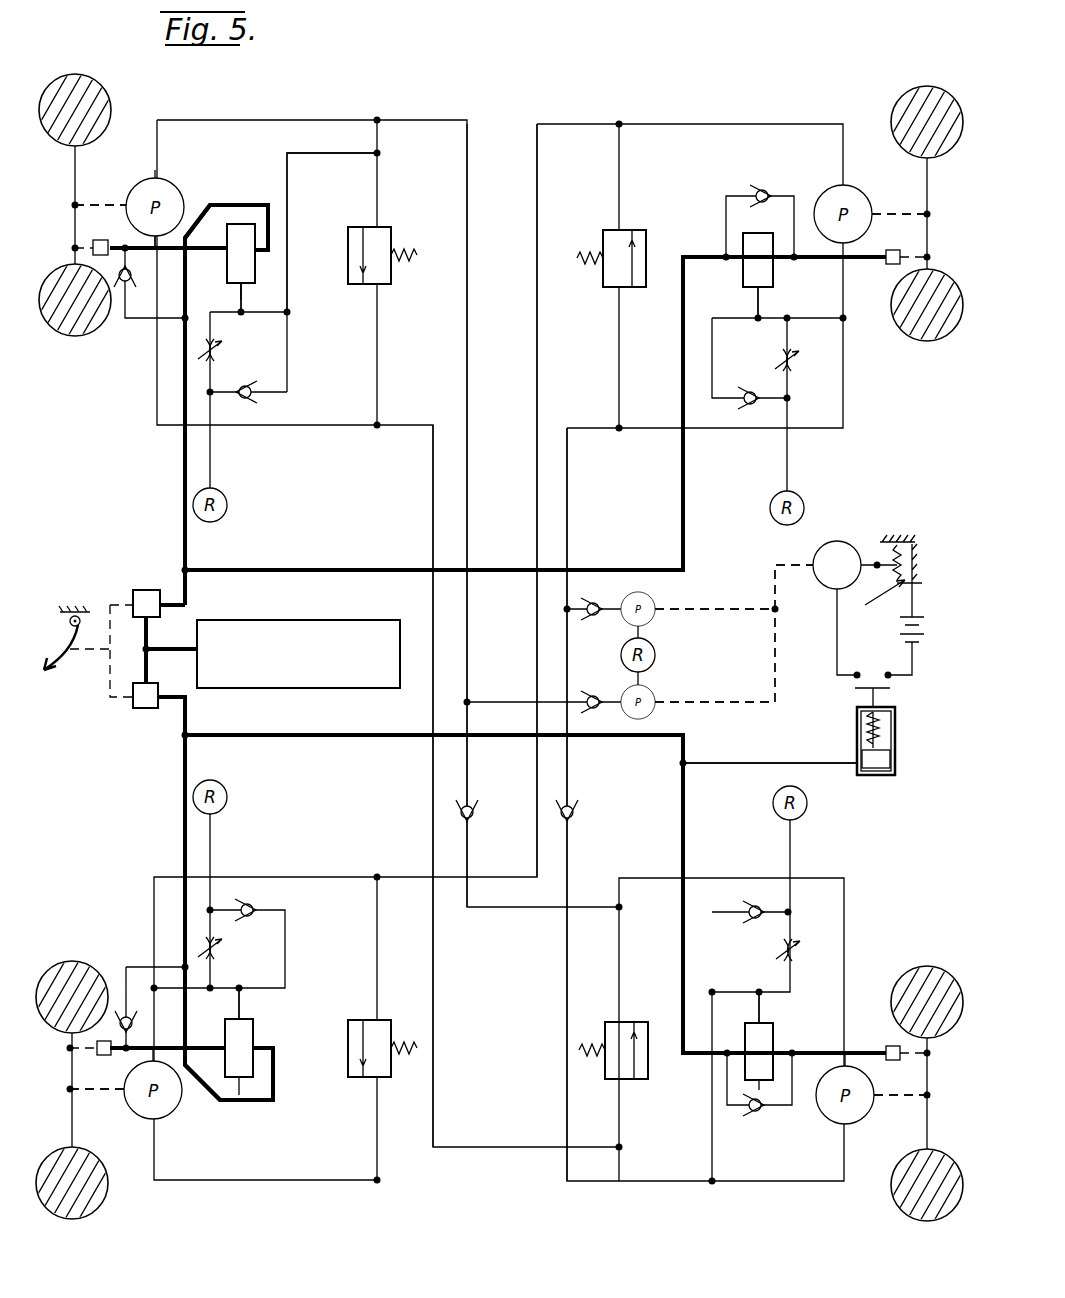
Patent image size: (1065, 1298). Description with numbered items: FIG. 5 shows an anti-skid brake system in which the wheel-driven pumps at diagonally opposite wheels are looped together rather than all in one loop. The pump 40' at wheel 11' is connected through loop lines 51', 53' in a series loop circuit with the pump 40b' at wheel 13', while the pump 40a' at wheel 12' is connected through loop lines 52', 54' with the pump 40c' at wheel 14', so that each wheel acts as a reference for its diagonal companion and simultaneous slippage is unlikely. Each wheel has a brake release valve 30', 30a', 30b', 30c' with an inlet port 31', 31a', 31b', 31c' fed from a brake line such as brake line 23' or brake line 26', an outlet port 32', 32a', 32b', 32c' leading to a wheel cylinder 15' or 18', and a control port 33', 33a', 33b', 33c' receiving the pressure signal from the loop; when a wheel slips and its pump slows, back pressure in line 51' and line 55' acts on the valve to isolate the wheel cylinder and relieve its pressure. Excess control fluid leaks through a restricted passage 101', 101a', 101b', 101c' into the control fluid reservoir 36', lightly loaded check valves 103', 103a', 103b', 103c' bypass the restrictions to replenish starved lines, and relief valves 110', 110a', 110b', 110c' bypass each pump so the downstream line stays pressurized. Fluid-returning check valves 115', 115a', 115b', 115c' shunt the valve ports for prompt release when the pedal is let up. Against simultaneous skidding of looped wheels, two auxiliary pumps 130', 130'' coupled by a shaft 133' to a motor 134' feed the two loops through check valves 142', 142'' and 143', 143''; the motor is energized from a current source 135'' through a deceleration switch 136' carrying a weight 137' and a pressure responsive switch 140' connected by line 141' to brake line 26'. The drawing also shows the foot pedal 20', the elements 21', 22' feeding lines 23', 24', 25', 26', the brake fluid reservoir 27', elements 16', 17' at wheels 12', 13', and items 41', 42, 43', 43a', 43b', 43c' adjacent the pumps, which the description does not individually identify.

The wheel 11' is at (84, 205).
The wheel 12' is at (72, 1088).
The wheel 13' is at (927, 1086).
The wheel 14' is at (927, 206).
The wheel cylinder 15' is at (101, 228).
The wheel brake 16' is at (94, 1060).
The wheel brake 17' is at (899, 1066).
The wheel cylinder 18' is at (899, 242).
The brake pedal 20' is at (67, 656).
The master cylinder 21' is at (141, 587).
The master cylinder 22' is at (120, 707).
The brake line 23' is at (158, 426).
The brake line 24' is at (457, 413).
The brake line 25' is at (407, 752).
The brake line 26' is at (784, 908).
The brake fluid reservoir 27' is at (298, 636).
The brake release valve 30' is at (282, 279).
The inlet port 31' is at (275, 253).
The outlet port 32' is at (226, 249).
The control port 33' is at (256, 307).
The control fluid reservoir 36' is at (518, 646).
The pump 40' is at (173, 196).
The pressure sensor line 41' is at (136, 162).
The pressure sensor connection 42 is at (157, 248).
The sensor lead 43' is at (100, 187).
The loop line 51' is at (485, 515).
The loop line 52' is at (555, 500).
The loop line 53' is at (453, 786).
The loop line 54' is at (545, 804).
The line 55' is at (332, 232).
The restricted passage 101' is at (233, 350).
The check valve 103' is at (275, 397).
The relief valve 110' is at (387, 269).
The check valve 115' is at (114, 311).
The relief valve 110c' is at (625, 241).
The check valve 115c' is at (746, 177).
The pump 40c' is at (835, 198).
The sensor lead 43c' is at (899, 195).
The inlet port 31c' is at (730, 256).
The outlet port 32c' is at (808, 270).
The control port 33c' is at (788, 302).
The check valve 103c' is at (743, 375).
The restricted passage 101c' is at (809, 371).
The auxiliary hydraulic pump 130' is at (664, 601).
The auxiliary hydraulic pump 130'' is at (666, 693).
The shaft 133' is at (734, 633).
The motor 134' is at (841, 547).
The source of current 135'' is at (926, 658).
The deceleration switch 136' is at (905, 542).
The weight 137' is at (874, 607).
The pressure responsive switch 140' is at (900, 731).
The line 141' is at (770, 746).
The first check valve 142' is at (607, 581).
The first check valve 142'' is at (599, 733).
The second check valve 143' is at (587, 827).
The second check valve 143'' is at (488, 827).
The check valve 115a' is at (134, 987).
The check valve 103a' is at (285, 901).
The restricted passage 101a' is at (239, 948).
The outlet port 32a' is at (229, 1050).
The control port 33a' is at (270, 1003).
The inlet port 31a' is at (276, 1048).
The brake release valve 30a' is at (221, 1106).
The sensor lead 43a' is at (97, 1111).
The pump 40a' is at (145, 1106).
The relief valve 110a' is at (357, 1068).
The relief valve 110b' is at (628, 1035).
The check valve 103b' is at (738, 889).
The restricted passage 101b' is at (813, 933).
The control port 33b' is at (789, 1008).
The outlet port 32b' is at (809, 1039).
The inlet port 31b' is at (719, 1058).
The brake release valve 30b' is at (707, 1101).
The pump 40b' is at (823, 1104).
The sensor lead 43b' is at (897, 1118).
The check valve 115b' is at (746, 1131).